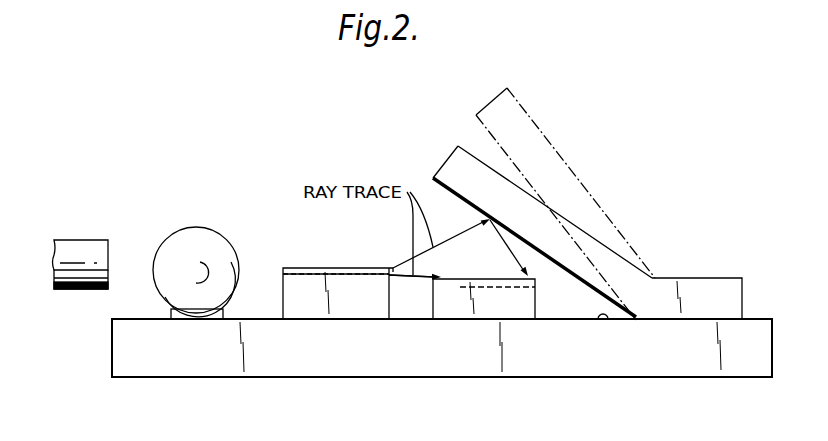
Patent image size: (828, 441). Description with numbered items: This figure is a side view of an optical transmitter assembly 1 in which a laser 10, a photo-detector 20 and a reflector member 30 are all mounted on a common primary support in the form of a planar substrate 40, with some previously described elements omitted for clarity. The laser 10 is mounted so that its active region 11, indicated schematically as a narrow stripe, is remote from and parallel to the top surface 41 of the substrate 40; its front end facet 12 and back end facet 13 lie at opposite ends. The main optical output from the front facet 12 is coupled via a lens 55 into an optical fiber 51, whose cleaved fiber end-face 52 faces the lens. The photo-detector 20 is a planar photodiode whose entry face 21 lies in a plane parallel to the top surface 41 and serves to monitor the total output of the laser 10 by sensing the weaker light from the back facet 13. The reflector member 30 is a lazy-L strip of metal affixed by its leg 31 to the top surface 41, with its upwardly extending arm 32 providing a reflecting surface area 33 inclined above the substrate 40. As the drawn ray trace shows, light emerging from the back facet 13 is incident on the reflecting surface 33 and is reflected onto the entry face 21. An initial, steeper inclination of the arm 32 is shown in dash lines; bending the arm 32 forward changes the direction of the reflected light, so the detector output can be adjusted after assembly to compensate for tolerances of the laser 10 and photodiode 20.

The optical transmitter assembly 1 is at (308, 391).
The laser 10 is at (312, 282).
The active region 11 is at (350, 273).
The front end facet 12 is at (278, 268).
The back end facet 13 is at (392, 267).
The photo-detector 20 is at (450, 312).
The entry face 21 is at (535, 287).
The reflector member 30 is at (603, 227).
The leg 31 is at (700, 283).
The upwardly extending arm 32 is at (463, 162).
The reflecting surface area 33 is at (455, 203).
The planar substrate 40 is at (678, 353).
The top surface 41 is at (603, 324).
The optical fiber 51 is at (90, 247).
The cleaved fiber end-face 52 is at (108, 257).
The lens 55 is at (198, 238).